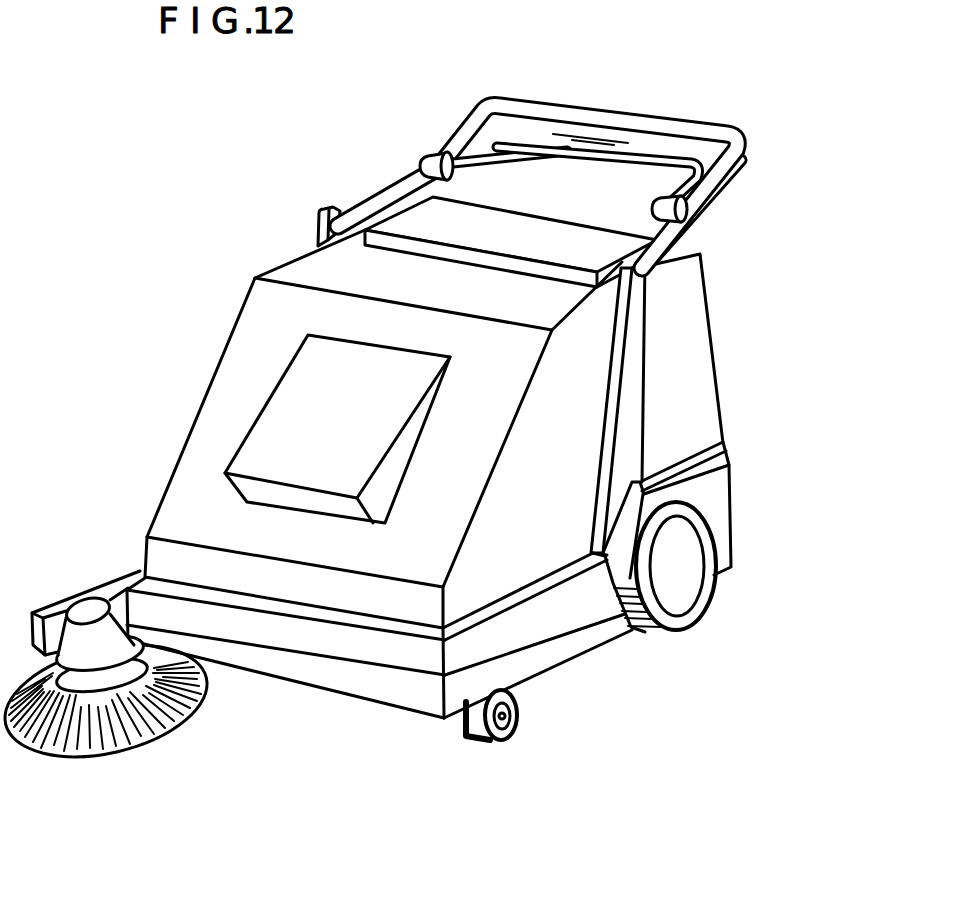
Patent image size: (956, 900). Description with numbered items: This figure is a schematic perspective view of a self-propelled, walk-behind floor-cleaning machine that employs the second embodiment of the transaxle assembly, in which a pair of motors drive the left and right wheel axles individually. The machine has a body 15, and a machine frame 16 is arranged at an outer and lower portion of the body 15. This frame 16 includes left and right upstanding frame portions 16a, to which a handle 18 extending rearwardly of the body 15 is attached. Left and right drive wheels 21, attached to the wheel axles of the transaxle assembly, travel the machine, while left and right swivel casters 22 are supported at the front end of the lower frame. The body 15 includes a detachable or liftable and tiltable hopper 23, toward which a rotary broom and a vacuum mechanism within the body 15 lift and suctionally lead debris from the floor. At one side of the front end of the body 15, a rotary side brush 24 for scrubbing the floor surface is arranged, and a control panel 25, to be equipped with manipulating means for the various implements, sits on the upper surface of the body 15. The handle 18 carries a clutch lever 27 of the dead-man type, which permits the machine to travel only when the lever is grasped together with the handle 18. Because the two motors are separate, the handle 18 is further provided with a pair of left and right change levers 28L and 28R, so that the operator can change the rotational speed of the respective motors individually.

The body 15 is at (253, 297).
The machine frame 16 is at (523, 617).
The upstanding frame portions 16a is at (321, 211).
The handle 18 is at (730, 178).
The drive wheels 21 is at (678, 630).
The swivel casters 22 is at (462, 735).
The hopper 23 is at (278, 426).
The rotary side brush 24 is at (163, 713).
The control panel 25 is at (523, 237).
The clutch lever 27 is at (582, 100).
The right change lever 28R is at (466, 148).
The left change lever 28L is at (638, 158).